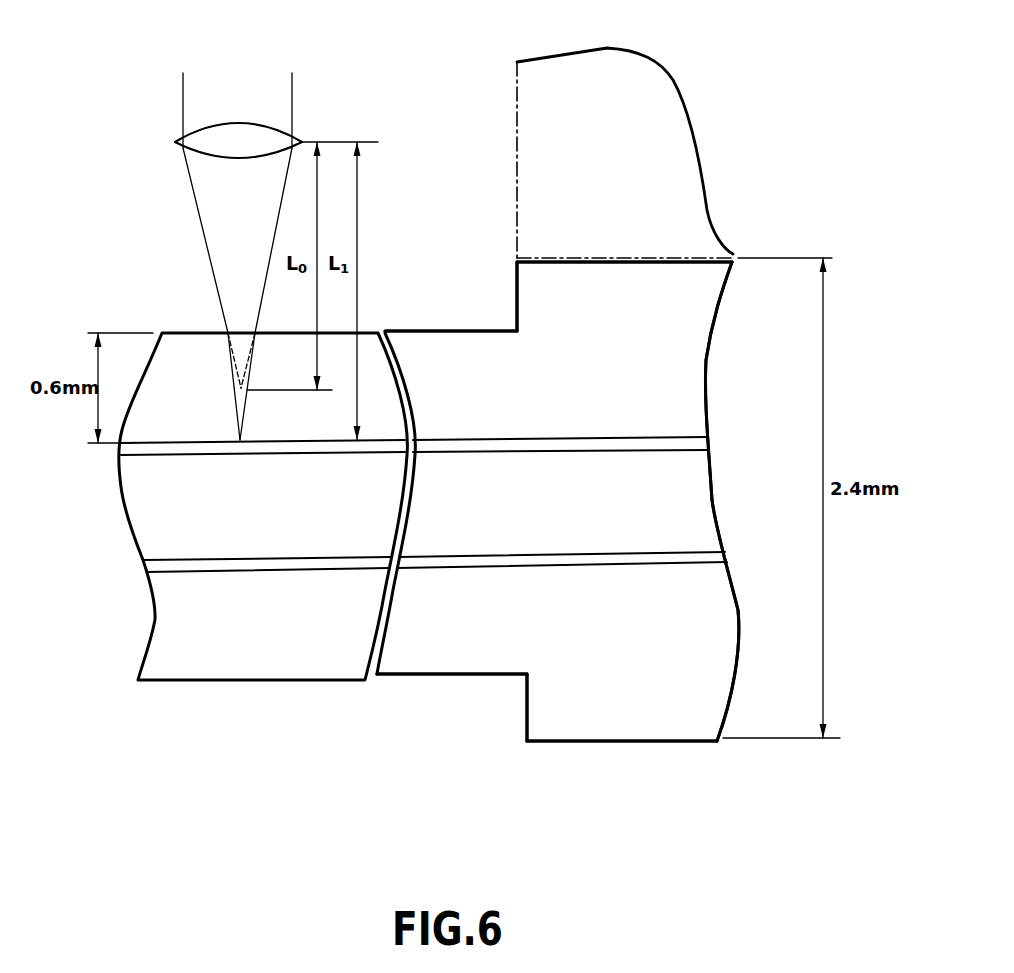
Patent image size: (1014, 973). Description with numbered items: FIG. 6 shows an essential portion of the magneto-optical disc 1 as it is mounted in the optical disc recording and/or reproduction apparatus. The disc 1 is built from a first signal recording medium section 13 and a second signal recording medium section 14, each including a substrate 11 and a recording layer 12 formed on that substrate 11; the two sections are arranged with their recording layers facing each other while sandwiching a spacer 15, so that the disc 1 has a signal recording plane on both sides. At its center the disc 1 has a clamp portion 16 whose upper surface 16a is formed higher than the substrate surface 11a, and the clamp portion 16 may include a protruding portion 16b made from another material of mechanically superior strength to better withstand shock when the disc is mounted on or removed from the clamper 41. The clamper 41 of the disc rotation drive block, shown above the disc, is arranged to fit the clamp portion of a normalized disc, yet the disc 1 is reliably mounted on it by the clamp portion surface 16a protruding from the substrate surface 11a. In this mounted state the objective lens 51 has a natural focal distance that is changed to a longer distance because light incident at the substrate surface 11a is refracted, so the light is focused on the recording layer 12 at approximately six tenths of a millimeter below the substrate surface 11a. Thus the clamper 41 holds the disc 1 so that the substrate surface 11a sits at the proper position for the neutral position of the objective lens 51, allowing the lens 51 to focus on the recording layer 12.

The magneto-optical disc 1 is at (412, 755).
The substrate 11 is at (693, 407).
The substrate surface 11a is at (423, 330).
The recording layer 12 is at (702, 440).
The first signal recording medium section 13 is at (777, 517).
The second signal recording medium section 14 is at (769, 383).
The spacer 15 is at (705, 505).
The clamp portion 16 is at (678, 323).
The clamp portion upper surface 16a is at (712, 262).
The protruding portion 16b is at (709, 291).
The clamper 41 is at (527, 165).
The objective lens 51 is at (175, 142).